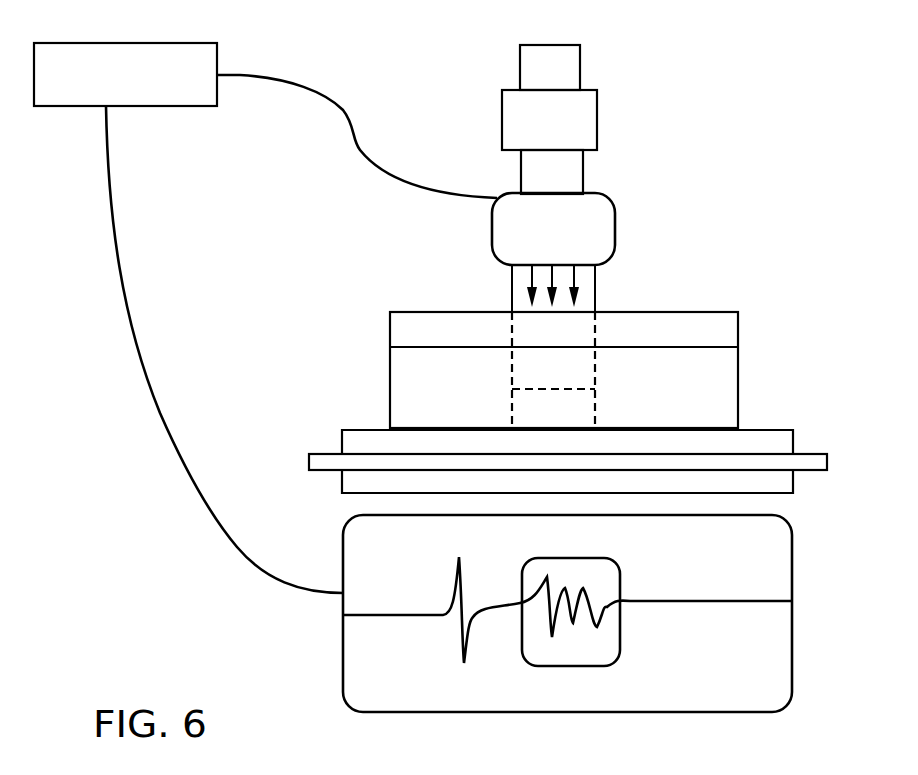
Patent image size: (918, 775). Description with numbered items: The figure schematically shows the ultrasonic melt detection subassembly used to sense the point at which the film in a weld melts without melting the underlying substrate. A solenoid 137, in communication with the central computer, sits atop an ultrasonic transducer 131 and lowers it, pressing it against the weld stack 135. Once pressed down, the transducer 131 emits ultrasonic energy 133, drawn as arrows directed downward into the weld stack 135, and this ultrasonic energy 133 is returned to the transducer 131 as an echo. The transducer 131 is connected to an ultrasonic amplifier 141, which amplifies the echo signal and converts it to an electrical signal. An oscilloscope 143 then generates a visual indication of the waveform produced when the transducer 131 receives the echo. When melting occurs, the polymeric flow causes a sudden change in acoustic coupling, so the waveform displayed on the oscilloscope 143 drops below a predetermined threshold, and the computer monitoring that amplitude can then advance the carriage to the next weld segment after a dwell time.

The ultrasonic amplifier 141 is at (165, 50).
The solenoid 137 is at (577, 113).
The ultrasonic transducer 131 is at (593, 205).
The ultrasonic energy 133 is at (573, 281).
The weld stack 135 is at (808, 457).
The oscilloscope 143 is at (758, 552).